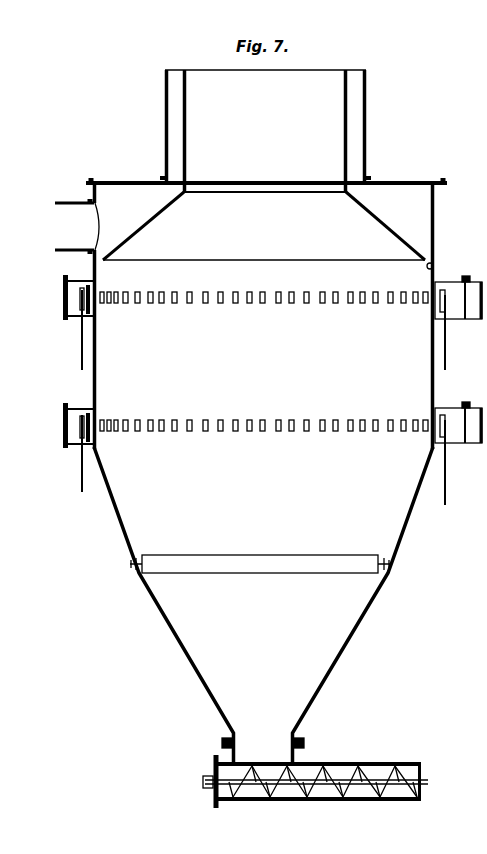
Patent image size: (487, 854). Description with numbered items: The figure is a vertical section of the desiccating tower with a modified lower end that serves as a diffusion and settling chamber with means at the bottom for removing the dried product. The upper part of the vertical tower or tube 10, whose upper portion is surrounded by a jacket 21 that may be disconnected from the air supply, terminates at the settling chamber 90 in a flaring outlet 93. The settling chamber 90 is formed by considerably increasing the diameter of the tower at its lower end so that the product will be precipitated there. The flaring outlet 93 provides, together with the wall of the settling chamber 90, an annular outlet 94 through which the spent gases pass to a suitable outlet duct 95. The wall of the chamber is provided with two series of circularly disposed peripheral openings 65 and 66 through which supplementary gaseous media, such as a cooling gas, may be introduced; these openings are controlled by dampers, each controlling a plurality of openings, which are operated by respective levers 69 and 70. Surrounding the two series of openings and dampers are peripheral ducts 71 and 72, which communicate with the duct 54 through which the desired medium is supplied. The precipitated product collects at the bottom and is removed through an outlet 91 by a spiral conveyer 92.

The tower 10 is at (325, 118).
The jacket 21 is at (360, 158).
The duct 54 is at (478, 306).
The openings 65 is at (322, 306).
The openings 66 is at (290, 433).
The lever 69 is at (82, 350).
The lever 70 is at (82, 481).
The peripheral duct 71 is at (68, 296).
The peripheral duct 72 is at (68, 425).
The settling chamber 90 is at (412, 388).
The outlet 91 is at (270, 758).
The spiral conveyer 92 is at (405, 777).
The flaring outlet 93 is at (410, 240).
The annular outlet 94 is at (436, 270).
The outlet duct 95 is at (64, 231).